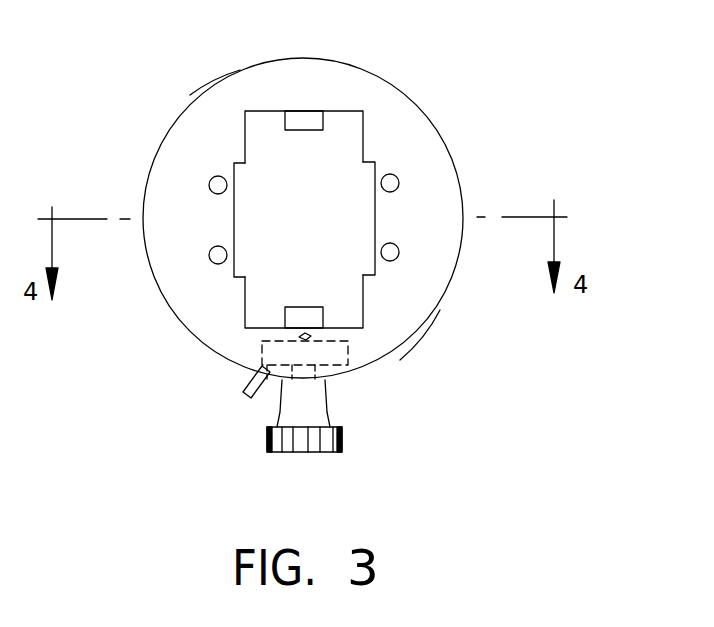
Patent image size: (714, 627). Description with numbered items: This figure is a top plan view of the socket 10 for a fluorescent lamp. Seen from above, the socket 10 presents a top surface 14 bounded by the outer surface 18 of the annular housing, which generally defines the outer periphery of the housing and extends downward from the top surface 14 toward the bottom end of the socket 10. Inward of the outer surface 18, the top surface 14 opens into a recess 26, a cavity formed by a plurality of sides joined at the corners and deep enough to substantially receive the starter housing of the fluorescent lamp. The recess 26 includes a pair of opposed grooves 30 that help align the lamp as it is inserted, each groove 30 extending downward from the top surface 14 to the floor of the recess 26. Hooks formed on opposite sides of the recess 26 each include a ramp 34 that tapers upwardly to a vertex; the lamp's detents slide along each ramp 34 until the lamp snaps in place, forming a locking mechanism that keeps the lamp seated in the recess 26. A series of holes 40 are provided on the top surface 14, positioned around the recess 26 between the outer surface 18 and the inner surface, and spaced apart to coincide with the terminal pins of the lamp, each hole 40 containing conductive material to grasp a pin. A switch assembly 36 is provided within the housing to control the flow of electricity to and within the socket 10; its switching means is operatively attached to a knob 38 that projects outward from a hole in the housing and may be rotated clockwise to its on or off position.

The socket 10 is at (443, 323).
The top surface 14 is at (380, 97).
The outer surface 18 is at (214, 88).
The recess 26 is at (304, 219).
The grooves 30 is at (233, 218).
The ramp 34 is at (303, 121).
The switch assembly 36 is at (262, 345).
The knob 38 is at (300, 452).
The holes 40 is at (209, 185).